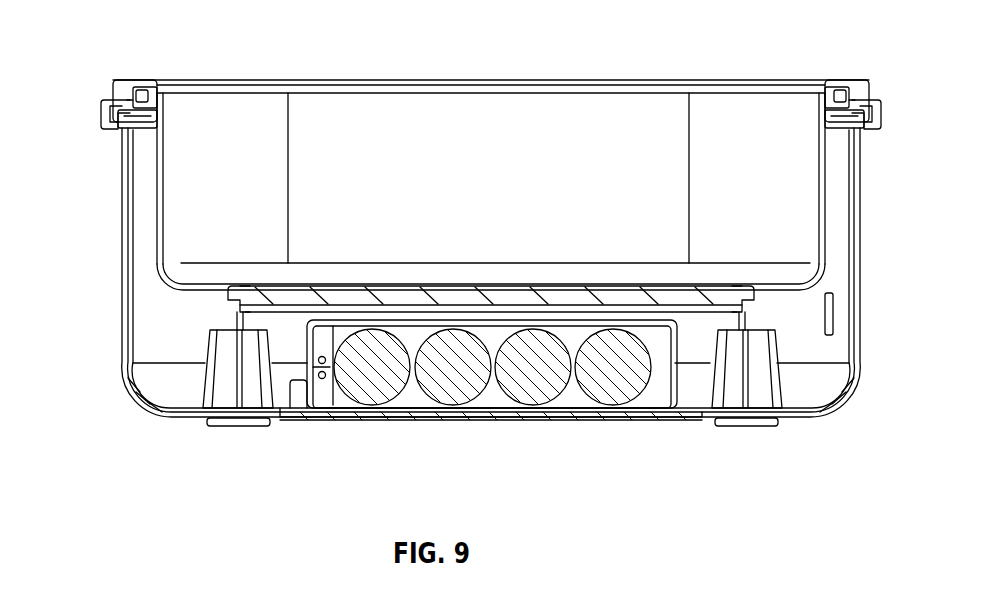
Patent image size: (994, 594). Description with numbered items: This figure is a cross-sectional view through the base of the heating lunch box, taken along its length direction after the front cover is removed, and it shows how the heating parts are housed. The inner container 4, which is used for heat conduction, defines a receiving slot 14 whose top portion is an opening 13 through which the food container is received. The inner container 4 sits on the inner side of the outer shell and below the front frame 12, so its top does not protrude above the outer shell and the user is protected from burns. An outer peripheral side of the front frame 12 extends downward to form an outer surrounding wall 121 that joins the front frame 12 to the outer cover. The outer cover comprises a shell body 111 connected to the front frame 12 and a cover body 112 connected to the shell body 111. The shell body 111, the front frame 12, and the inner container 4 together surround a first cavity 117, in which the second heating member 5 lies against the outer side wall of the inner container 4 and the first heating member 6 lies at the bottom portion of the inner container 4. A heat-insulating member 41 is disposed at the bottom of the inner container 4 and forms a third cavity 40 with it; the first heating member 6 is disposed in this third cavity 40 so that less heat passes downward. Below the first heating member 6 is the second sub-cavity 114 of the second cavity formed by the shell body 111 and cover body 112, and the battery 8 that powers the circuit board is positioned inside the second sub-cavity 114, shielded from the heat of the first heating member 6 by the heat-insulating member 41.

The front frame 12 is at (155, 85).
The outer surrounding wall 121 is at (118, 112).
The second heating member 5 is at (157, 128).
The shell body 111 is at (128, 216).
The first cavity 117 is at (163, 316).
The heat-insulating member 41 is at (262, 298).
The receiving slot 14 is at (488, 132).
The opening 13 is at (752, 85).
The inner container 4 is at (817, 268).
The first heating member 6 is at (222, 410).
The second sub-cavity 114 is at (322, 398).
The cover body 112 is at (480, 418).
The battery 8 is at (612, 395).
The third cavity 40 is at (735, 396).